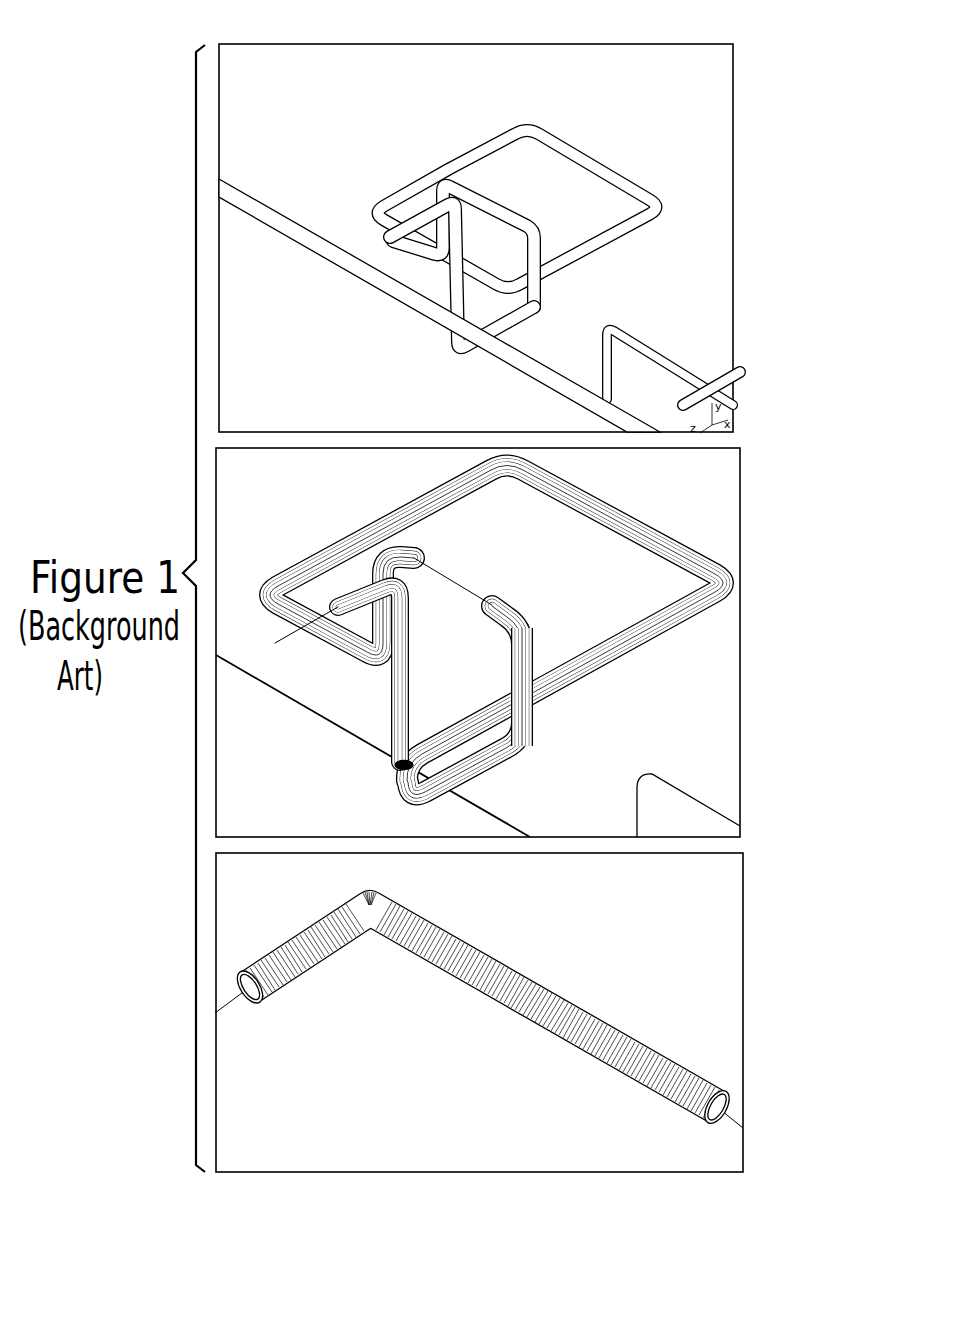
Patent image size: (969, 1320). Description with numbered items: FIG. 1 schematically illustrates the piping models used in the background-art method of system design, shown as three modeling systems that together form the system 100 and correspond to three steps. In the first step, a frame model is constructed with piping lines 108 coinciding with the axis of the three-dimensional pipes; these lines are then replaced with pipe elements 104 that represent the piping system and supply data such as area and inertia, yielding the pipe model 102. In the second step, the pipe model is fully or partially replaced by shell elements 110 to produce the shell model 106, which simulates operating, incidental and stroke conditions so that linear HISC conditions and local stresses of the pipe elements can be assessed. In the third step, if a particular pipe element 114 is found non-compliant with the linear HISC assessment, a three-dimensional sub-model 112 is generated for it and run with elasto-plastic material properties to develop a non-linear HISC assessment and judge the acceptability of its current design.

The system 100 is at (768, 88).
The pipe model 102 is at (231, 44).
The pipe elements 104 is at (556, 128).
The shell model 106 is at (738, 553).
The piping lines 108 is at (683, 792).
The shell elements 110 is at (664, 607).
The three-dimensional sub-model 112 is at (745, 924).
The pipe element 114 is at (557, 990).